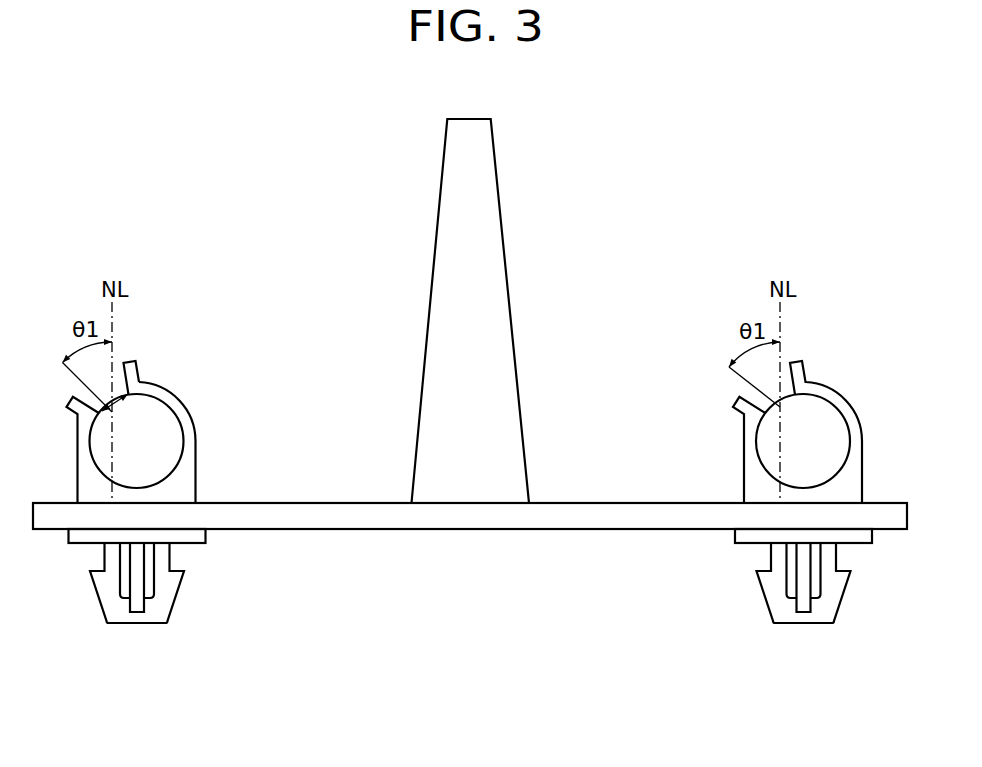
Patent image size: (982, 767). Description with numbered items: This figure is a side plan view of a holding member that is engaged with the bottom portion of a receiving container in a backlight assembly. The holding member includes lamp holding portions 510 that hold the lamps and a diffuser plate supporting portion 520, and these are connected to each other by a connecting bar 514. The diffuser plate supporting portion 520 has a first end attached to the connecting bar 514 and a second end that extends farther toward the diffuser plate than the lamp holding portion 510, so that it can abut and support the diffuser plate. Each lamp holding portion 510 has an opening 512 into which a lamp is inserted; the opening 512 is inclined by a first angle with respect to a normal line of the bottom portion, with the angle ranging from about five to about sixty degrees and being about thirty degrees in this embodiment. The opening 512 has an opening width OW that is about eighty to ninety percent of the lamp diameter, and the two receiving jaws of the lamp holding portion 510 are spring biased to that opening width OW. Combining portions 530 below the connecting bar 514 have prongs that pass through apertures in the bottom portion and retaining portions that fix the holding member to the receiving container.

The lamp holding portion 510 is at (188, 438).
The opening 512 is at (138, 380).
The connecting bar 514 is at (566, 512).
The diffuser plate supporting portion 520 is at (508, 438).
The combining portion 530 is at (165, 589).
The opening width OW is at (125, 396).